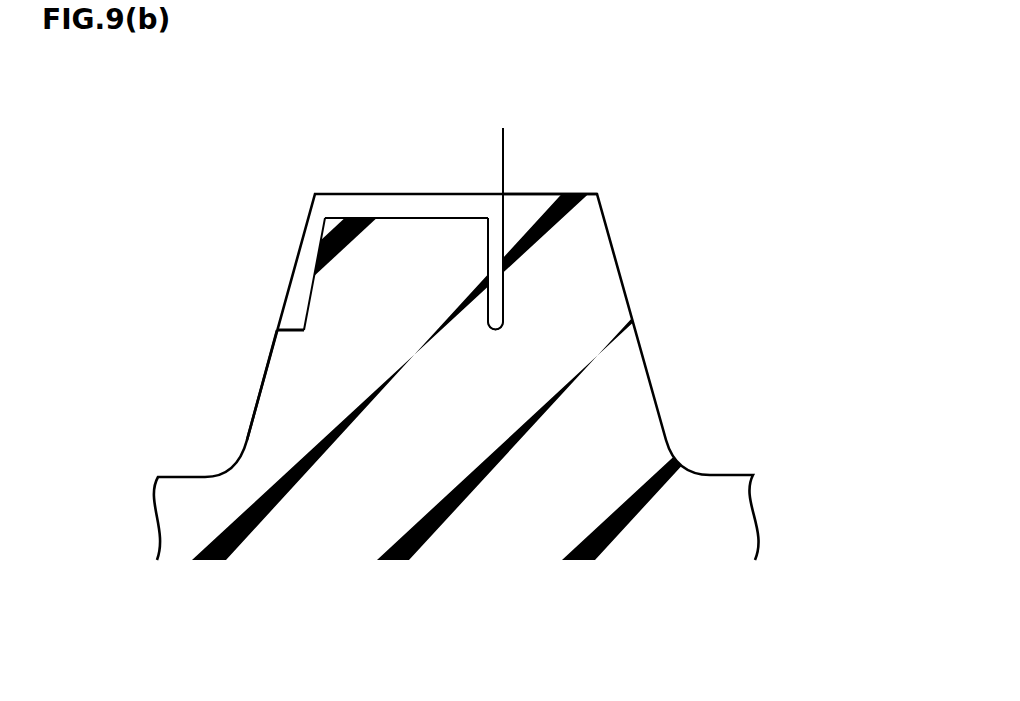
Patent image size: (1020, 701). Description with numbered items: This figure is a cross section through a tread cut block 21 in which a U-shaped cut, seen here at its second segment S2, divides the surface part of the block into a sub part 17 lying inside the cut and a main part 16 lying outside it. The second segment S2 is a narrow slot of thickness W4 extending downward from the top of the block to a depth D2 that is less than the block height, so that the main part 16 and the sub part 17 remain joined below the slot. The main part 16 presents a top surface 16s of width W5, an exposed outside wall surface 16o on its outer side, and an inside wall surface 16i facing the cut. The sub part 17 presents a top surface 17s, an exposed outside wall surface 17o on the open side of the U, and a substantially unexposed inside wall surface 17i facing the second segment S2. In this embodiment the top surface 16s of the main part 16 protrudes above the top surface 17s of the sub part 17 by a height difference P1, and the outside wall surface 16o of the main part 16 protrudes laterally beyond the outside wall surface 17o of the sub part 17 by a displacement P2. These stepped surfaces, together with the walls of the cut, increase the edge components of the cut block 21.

The cut block 21 is at (640, 97).
The sub part 17 is at (398, 327).
The main part 16 is at (573, 343).
The top surface of the sub part 17s is at (383, 218).
The inside wall surface of the sub part 17i is at (489, 235).
The outside wall surface of the sub part 17o is at (313, 287).
The top surface of the main part 16s is at (572, 195).
The inside wall surface of the main part 16i is at (495, 237).
The outside wall surface of the main part 16o is at (267, 370).
The second segment S2 is at (493, 300).
The amount of displacement P1 is at (272, 250).
The amount of displacement P2 is at (278, 330).
The thickness of the cut W4 is at (488, 332).
The width of the top surface of the main part W5 is at (597, 137).
The depth of the cut D2 is at (597, 194).